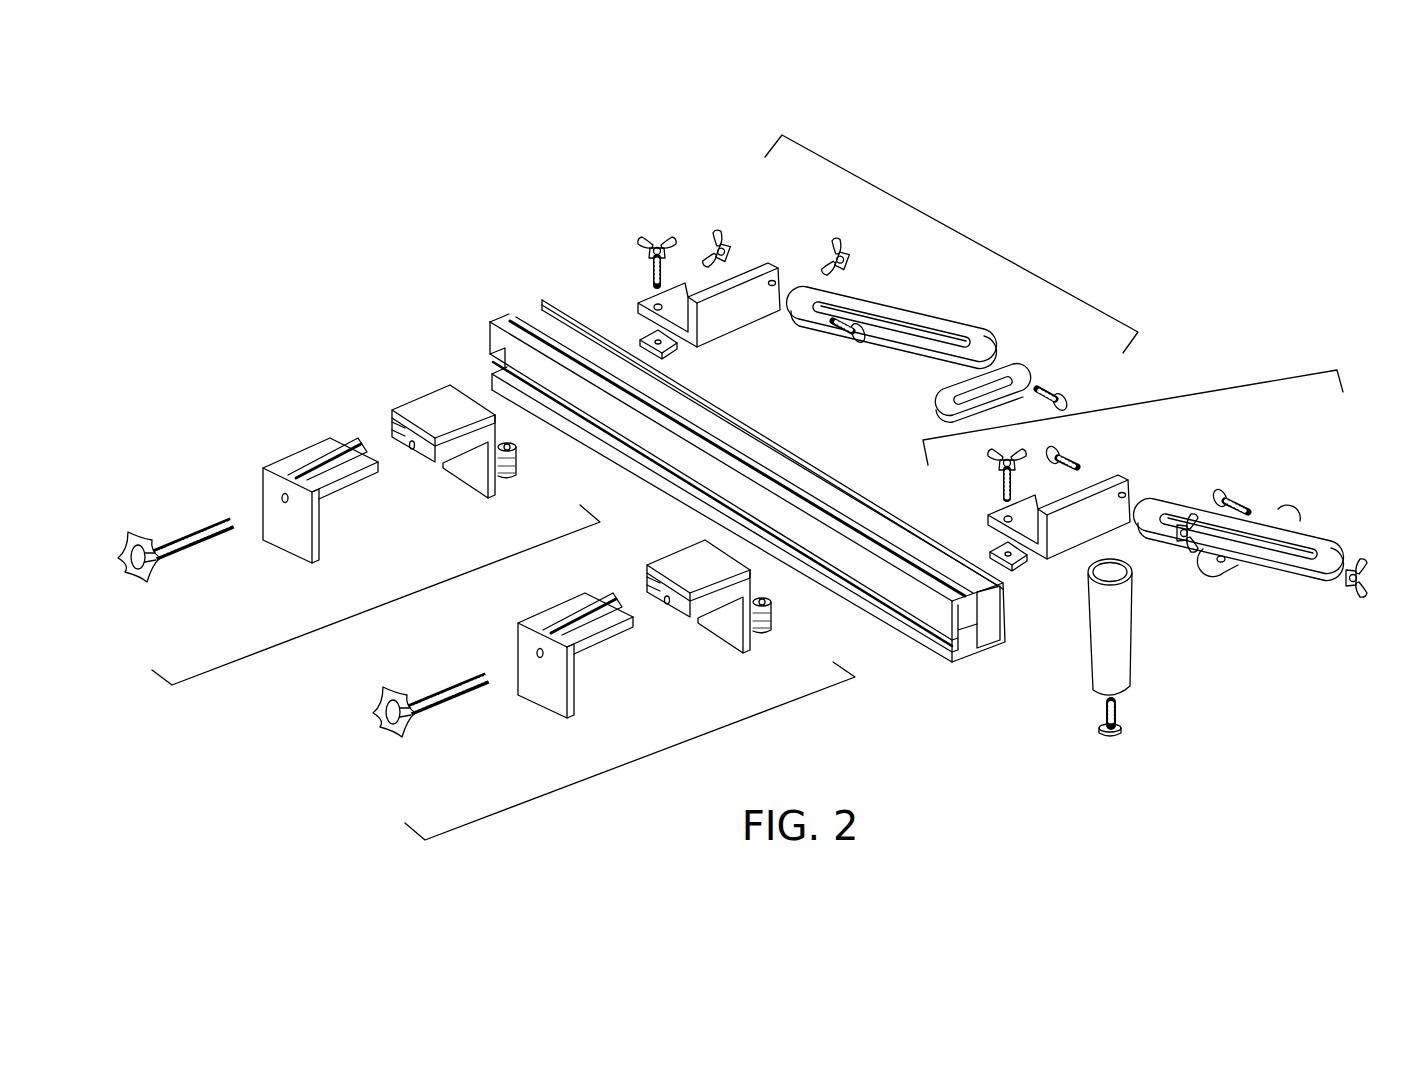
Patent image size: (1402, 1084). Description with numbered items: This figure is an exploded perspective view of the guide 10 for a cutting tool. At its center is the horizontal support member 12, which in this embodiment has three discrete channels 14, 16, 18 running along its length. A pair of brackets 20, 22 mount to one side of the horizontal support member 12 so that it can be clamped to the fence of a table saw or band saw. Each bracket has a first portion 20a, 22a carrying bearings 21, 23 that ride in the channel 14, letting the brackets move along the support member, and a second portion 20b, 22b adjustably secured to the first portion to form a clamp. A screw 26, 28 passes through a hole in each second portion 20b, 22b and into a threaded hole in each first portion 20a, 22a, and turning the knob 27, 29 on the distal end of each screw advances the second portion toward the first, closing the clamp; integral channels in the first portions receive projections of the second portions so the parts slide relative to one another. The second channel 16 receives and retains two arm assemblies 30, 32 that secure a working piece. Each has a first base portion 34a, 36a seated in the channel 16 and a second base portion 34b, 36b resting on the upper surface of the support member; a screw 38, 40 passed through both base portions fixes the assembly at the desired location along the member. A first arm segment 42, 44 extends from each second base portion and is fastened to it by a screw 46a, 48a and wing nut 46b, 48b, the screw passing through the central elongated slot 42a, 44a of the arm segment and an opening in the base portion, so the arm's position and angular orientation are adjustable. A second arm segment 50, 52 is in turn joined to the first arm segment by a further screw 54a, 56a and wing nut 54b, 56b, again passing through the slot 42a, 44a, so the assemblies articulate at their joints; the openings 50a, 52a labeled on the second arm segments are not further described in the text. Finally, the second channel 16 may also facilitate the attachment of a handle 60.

The guide 10 is at (459, 262).
The horizontal support member 12 is at (987, 647).
The channel 14 is at (973, 653).
The second channel 16 is at (950, 617).
The channel 18 is at (995, 620).
The bracket 20 is at (359, 535).
The first bracket portion 20a is at (477, 483).
The second bracket portion 20b is at (300, 550).
The bearings 21 is at (515, 445).
The bracket 22 is at (614, 690).
The first bracket portion 22a is at (732, 637).
The second bracket portion 22b is at (555, 703).
The bearings 23 is at (775, 607).
The screw 26 is at (193, 548).
The knob 27 is at (153, 565).
The screw 28 is at (447, 700).
The knob 29 is at (413, 727).
The arm assembly 30 is at (856, 278).
The arm assembly 32 is at (1155, 502).
The first base portion 34a is at (642, 337).
The second base portion 34b is at (740, 322).
The first base portion 36a is at (992, 548).
The second base portion 36b is at (1053, 543).
The screw 38 is at (656, 240).
The screw 40 is at (1000, 473).
The first arm segment 42 is at (880, 313).
The central elongated opening or slot 42a is at (977, 335).
The first arm segment 44 is at (1177, 510).
The central elongated opening or slot 44a is at (1327, 540).
The screw 46a is at (837, 330).
The wing nut 46b is at (737, 232).
The screw 48a is at (1062, 450).
The wing nut 48b is at (1180, 552).
The second arm segment 50 is at (1015, 363).
The slot 50a is at (943, 383).
The second arm segment 52 is at (1282, 517).
The slot 52a is at (1230, 557).
The screw 54a is at (1060, 387).
The wing nut 54b is at (852, 255).
The screw 56a is at (1237, 497).
The wing nut 56b is at (1348, 607).
The handle 60 is at (1122, 636).